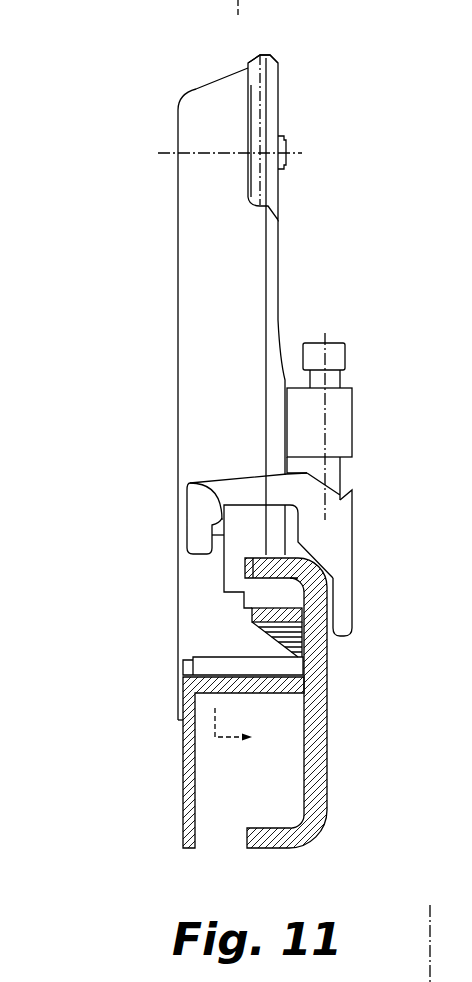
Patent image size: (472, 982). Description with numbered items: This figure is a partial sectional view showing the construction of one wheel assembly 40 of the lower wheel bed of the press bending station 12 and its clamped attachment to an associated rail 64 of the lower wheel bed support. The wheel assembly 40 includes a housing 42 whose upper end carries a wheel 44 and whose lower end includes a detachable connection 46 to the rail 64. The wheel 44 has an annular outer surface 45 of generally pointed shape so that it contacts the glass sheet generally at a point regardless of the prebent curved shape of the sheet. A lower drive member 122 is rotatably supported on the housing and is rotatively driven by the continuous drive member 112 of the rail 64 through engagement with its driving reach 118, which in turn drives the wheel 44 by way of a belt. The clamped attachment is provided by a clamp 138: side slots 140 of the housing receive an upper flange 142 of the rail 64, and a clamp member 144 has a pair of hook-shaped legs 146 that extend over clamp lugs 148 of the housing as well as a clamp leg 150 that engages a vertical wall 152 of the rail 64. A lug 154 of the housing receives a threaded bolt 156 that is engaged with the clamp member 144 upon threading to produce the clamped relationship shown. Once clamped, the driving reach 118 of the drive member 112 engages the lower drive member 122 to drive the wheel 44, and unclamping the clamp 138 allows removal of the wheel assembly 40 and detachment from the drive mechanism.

The press bending station 12 is at (256, 730).
The wheel assembly 40 is at (298, 242).
The housing 42 is at (203, 415).
The wheel 44 is at (278, 115).
The annular outer surface 45 is at (268, 53).
The detachable connection 46 is at (358, 513).
The rail 64 is at (335, 673).
The continuous drive member 112 is at (244, 615).
The driving reach 118 is at (317, 570).
The lower drive member 122 is at (300, 642).
The clamp 138 is at (364, 378).
The side slots 140 is at (244, 591).
The upper flange 142 is at (252, 565).
The clamp member 144 is at (340, 502).
The legs 146 is at (195, 497).
The clamp lugs 148 is at (190, 483).
The clamp leg 150 is at (343, 610).
The vertical wall 152 is at (326, 652).
The lug 154 is at (340, 423).
The threaded bolt 156 is at (340, 375).